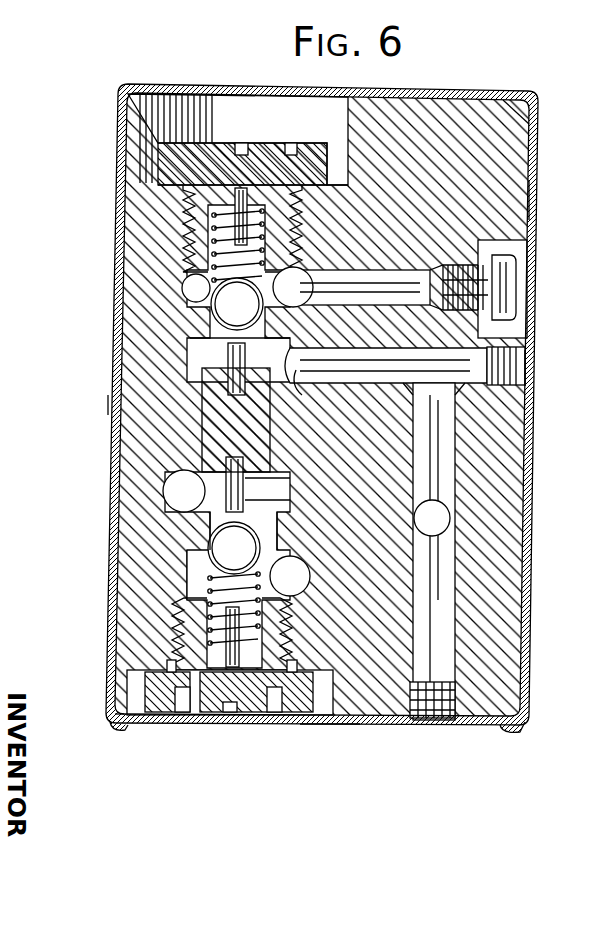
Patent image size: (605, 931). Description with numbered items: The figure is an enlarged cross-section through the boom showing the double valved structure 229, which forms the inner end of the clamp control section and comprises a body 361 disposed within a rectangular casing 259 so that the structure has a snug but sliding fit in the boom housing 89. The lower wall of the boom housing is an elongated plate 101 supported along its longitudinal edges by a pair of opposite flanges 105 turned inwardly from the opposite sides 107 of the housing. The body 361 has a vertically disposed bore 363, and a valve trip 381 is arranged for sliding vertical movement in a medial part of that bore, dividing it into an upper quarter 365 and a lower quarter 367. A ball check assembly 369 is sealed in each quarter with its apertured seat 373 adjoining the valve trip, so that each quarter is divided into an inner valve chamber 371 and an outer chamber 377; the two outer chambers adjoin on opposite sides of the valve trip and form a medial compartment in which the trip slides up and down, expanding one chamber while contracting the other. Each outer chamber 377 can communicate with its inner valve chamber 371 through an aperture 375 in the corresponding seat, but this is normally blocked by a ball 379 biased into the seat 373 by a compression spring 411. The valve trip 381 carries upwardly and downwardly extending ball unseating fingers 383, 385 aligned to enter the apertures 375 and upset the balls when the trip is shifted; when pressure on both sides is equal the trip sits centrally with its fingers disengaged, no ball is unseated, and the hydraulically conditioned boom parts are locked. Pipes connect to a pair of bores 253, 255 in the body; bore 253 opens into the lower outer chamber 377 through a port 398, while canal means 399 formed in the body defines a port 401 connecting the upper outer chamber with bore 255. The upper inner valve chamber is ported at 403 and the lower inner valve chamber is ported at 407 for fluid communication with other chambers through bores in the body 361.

The double valved structure 229 is at (450, 88).
The body 361 is at (331, 384).
The bore 363 is at (218, 135).
The upper quarter 365 is at (143, 171).
The ball check assembly 369 is at (212, 248).
The inner valve chamber 371 is at (196, 232).
The seat 373 is at (190, 333).
The aperture 375 is at (225, 330).
The outer chamber 377 is at (228, 368).
The ball 379 is at (235, 426).
The valve trip 381 is at (202, 426).
The ball unseating finger 383 is at (303, 366).
The ball unseating finger 385 is at (280, 490).
The port 398 is at (166, 491).
The canal means 399 is at (455, 438).
The port 401 is at (304, 385).
The port 403 is at (316, 287).
The port 407 is at (306, 586).
The compression spring 411 is at (256, 243).
The boom housing 89 is at (540, 205).
The side 107 is at (108, 405).
The bore 253 is at (182, 512).
The bore 255 is at (450, 518).
The rectangular casing 259 is at (114, 710).
The lower quarter 367 is at (114, 688).
The elongated plate 101 is at (322, 728).
The flange 105 is at (122, 735).